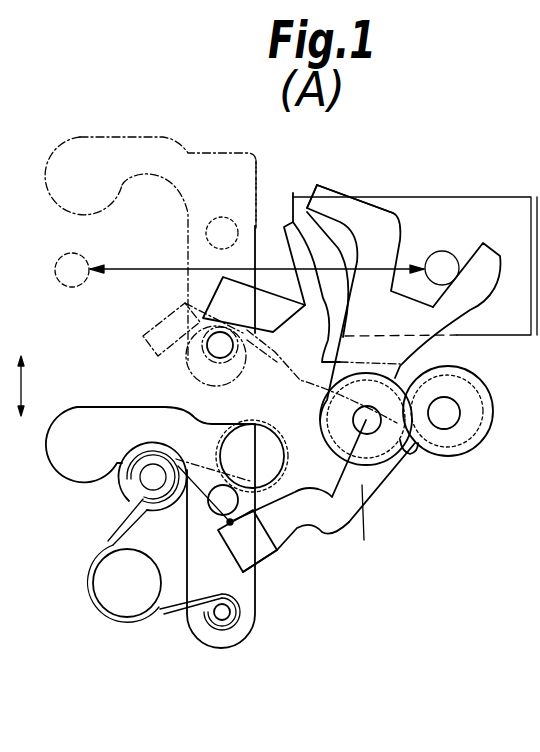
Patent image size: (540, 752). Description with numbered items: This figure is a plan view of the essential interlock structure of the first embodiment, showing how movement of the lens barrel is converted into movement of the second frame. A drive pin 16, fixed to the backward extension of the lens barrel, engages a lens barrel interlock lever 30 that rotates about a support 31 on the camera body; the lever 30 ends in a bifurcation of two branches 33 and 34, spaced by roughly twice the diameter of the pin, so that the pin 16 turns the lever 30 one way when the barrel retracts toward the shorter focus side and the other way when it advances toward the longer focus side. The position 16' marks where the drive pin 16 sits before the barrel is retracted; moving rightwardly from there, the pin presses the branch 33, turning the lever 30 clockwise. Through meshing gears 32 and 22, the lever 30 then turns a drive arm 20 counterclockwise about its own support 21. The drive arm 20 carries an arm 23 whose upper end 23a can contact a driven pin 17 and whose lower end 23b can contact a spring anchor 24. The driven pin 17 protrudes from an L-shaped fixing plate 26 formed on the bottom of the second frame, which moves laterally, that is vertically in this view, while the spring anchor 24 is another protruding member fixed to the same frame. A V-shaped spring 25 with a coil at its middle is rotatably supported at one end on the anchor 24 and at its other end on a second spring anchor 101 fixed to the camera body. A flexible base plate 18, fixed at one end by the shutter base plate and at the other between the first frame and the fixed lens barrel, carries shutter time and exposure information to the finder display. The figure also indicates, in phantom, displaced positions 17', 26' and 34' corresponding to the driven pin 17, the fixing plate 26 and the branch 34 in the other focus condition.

The drive pin 16 is at (284, 226).
The position of drive pin 16' is at (53, 261).
The driven pin 17 is at (191, 515).
The roller (phantom position) 17' is at (189, 233).
The flexible base plate 18 is at (510, 210).
The drive arm 20 is at (380, 487).
The support 21 is at (457, 418).
The gear 22 is at (463, 454).
The arm 23 is at (274, 500).
The upper end of arm 23a is at (268, 545).
The lower end of arm 23b is at (258, 572).
The spring anchor 24 is at (227, 621).
The V-shaped spring 25 is at (248, 415).
The L-shaped fixing plate 26 is at (150, 506).
The arm (phantom position) 26' is at (150, 222).
The lens barrel interlock lever 30 is at (405, 288).
The support 31 is at (356, 423).
The gear 32 is at (405, 461).
The branch 33 is at (473, 303).
The branch 34 is at (350, 174).
The arm end (phantom position) 34' is at (243, 392).
The spring anchor 101 is at (148, 481).